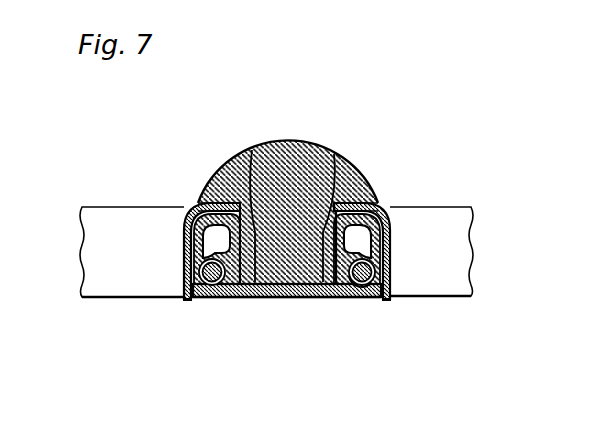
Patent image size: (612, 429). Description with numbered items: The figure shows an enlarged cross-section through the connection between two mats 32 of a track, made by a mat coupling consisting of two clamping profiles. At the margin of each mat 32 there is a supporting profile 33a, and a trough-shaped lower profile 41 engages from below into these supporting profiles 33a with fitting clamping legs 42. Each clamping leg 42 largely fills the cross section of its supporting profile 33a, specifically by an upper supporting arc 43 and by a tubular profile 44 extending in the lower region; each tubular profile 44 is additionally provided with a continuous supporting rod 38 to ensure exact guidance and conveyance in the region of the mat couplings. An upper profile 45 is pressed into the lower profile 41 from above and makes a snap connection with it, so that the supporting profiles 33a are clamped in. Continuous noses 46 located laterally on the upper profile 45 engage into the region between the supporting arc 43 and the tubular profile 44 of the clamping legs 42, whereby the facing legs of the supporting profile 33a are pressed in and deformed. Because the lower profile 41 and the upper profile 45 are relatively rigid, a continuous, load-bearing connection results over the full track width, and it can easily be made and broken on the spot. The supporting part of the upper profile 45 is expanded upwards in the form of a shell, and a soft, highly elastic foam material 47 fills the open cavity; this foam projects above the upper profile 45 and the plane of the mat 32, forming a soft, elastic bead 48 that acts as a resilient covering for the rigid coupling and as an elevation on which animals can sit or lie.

The mat 32 is at (102, 200).
The supporting profile 33a is at (182, 262).
The supporting rod 38 is at (363, 298).
The lower profile 41 is at (282, 300).
The clamping leg 42 is at (198, 222).
The supporting arc 43 is at (202, 203).
The tubular profile 44 is at (207, 297).
The upper profile 45 is at (381, 170).
The nose 46 is at (330, 188).
The foam material 47 is at (286, 250).
The bead 48 is at (300, 143).